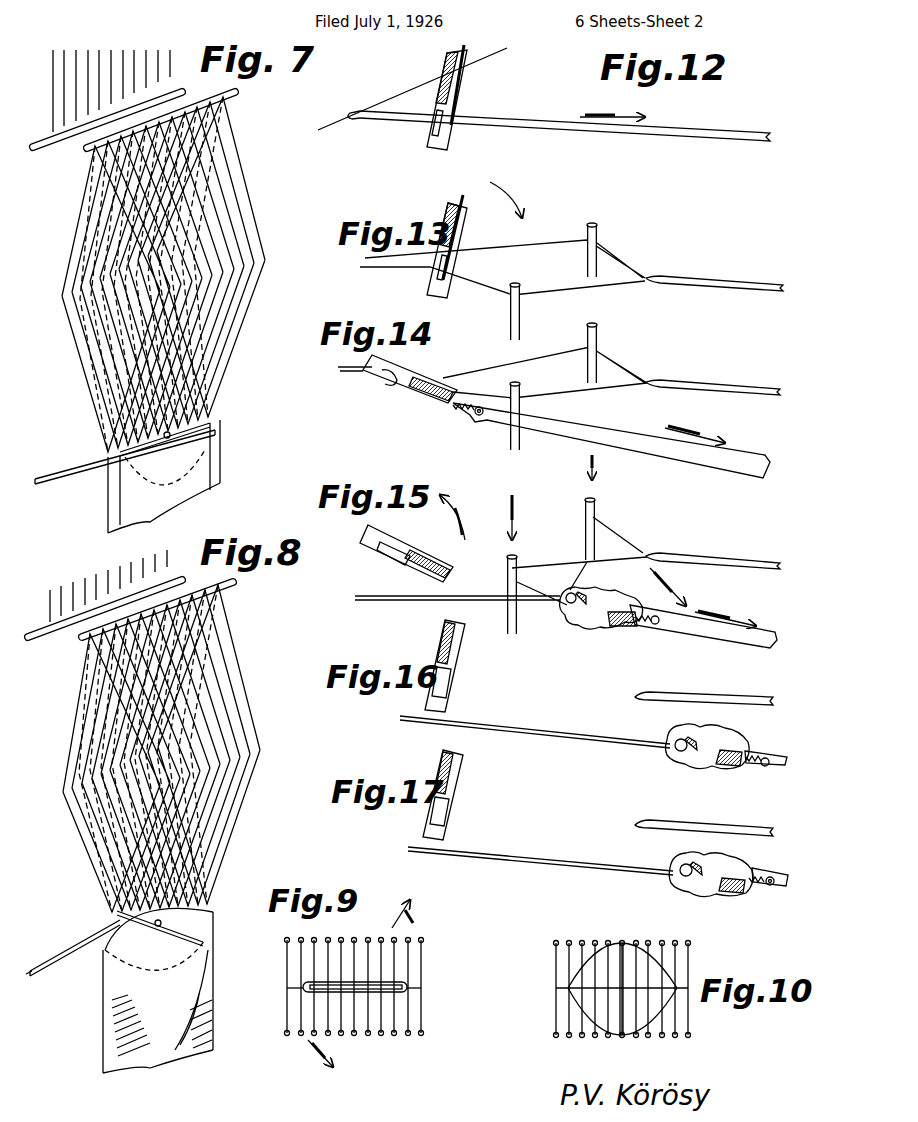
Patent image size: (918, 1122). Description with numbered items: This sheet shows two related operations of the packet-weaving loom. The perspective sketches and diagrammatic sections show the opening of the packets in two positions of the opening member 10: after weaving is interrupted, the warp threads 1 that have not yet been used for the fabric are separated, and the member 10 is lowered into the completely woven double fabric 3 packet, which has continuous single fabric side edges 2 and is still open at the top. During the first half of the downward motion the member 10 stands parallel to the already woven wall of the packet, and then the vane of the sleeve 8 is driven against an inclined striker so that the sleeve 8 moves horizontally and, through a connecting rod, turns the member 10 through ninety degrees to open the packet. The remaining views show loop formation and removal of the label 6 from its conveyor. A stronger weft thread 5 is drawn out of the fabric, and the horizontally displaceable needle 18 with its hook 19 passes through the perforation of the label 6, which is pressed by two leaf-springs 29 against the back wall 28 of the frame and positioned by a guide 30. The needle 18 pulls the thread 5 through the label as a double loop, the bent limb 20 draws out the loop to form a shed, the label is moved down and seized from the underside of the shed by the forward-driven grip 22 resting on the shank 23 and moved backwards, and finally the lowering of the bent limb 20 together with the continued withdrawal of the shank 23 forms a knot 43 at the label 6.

In FIG. 7, the warp threads 1 is at (87, 227).
In FIG. 8, the warp threads 1 is at (92, 712).
In FIG. 9, the warp threads 1 is at (395, 958).
In FIG. 10, the warp threads 1 is at (689, 956).
In FIG. 7, the flat edges 2 is at (108, 502).
In FIG. 8, the flat edges 2 is at (208, 943).
In FIG. 9, the flat edges 2 is at (410, 988).
In FIG. 10, the flat edges 2 is at (568, 988).
In FIG. 7, the double fabric 3 is at (200, 473).
In FIG. 8, the double fabric 3 is at (193, 990).
In FIG. 9, the double fabric 3 is at (310, 975).
In FIG. 10, the double fabric 3 is at (606, 1033).
In FIG. 12, the weft thread 5 is at (505, 52).
In FIG. 13, the weft thread 5 is at (392, 266).
In FIG. 15, the weft thread 5 is at (552, 567).
In FIG. 16, the weft thread 5 is at (550, 734).
In FIG. 12, the label 6 is at (462, 48).
In FIG. 15, the label 6 is at (605, 630).
In FIG. 16, the label 6 is at (735, 750).
In FIG. 7, the sleeve 8 is at (57, 476).
In FIG. 8, the sleeve 8 is at (57, 964).
In FIG. 7, the member 10 is at (207, 443).
In FIG. 8, the member 10 is at (202, 927).
In FIG. 9, the member 10 is at (318, 991).
In FIG. 10, the member 10 is at (618, 958).
In FIG. 12, the needle 18 is at (534, 121).
In FIG. 13, the needle 18 is at (740, 284).
In FIG. 15, the needle 18 is at (740, 560).
In FIG. 16, the needle 18 is at (733, 700).
In FIG. 17, the needle 18 is at (695, 829).
In FIG. 12, the hook 19 is at (360, 118).
In FIG. 13, the bent limb 20 is at (587, 256).
In FIG. 15, the bent limb 20 is at (597, 522).
In FIG. 14, the grip 22 is at (465, 415).
In FIG. 17, the grip 22 is at (770, 876).
In FIG. 14, the shank 23 is at (757, 460).
In FIG. 12, the back wall 28 is at (447, 62).
In FIG. 12, the leaf-springs 29 is at (470, 79).
In FIG. 15, the guide 30 is at (452, 573).
In FIG. 16, the guide 30 is at (455, 756).
In FIG. 16, the knot 43 is at (688, 733).
In FIG. 17, the knot 43 is at (686, 868).